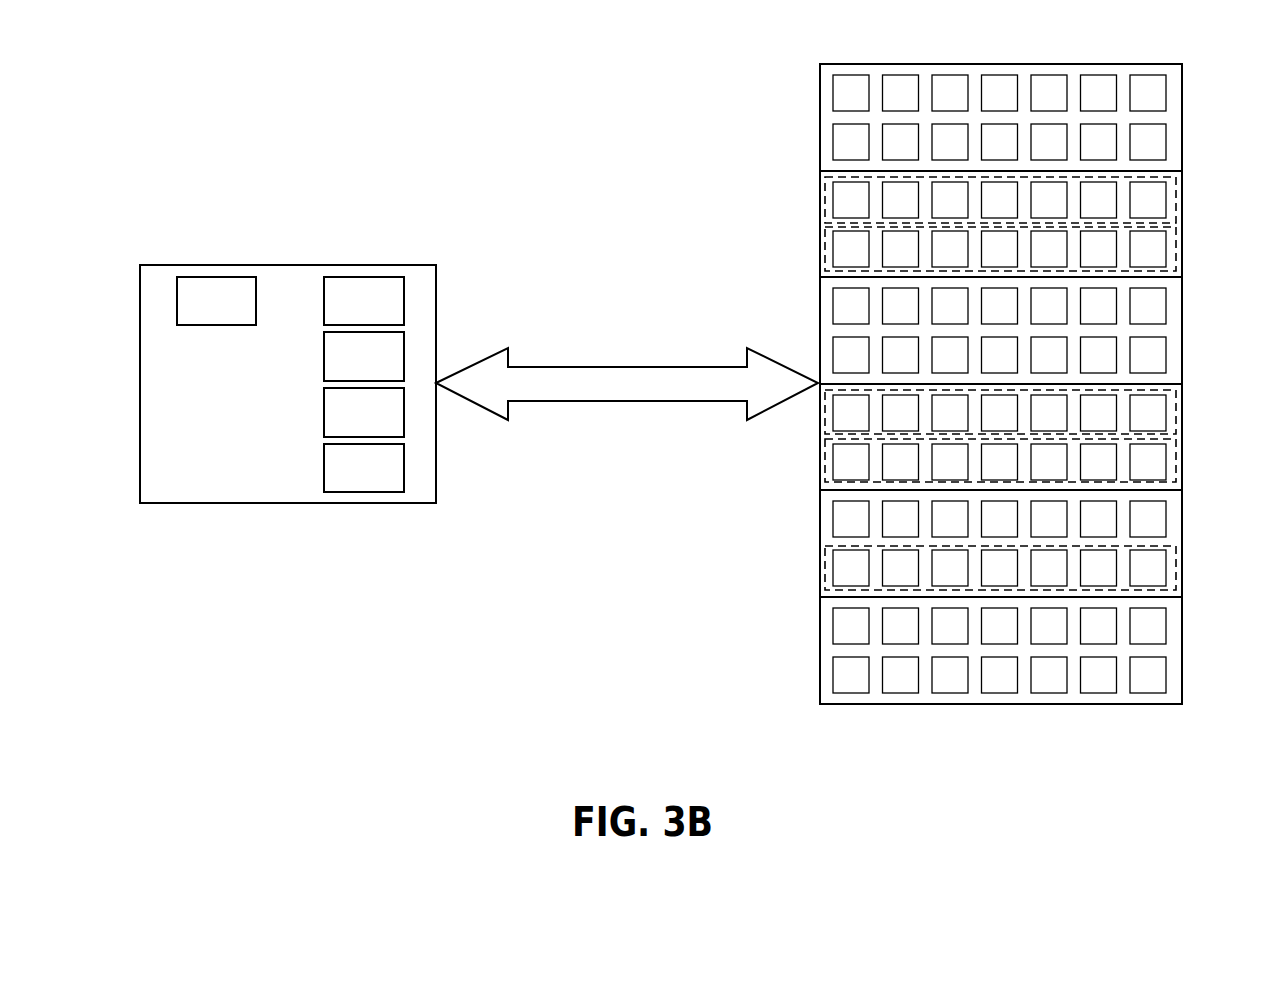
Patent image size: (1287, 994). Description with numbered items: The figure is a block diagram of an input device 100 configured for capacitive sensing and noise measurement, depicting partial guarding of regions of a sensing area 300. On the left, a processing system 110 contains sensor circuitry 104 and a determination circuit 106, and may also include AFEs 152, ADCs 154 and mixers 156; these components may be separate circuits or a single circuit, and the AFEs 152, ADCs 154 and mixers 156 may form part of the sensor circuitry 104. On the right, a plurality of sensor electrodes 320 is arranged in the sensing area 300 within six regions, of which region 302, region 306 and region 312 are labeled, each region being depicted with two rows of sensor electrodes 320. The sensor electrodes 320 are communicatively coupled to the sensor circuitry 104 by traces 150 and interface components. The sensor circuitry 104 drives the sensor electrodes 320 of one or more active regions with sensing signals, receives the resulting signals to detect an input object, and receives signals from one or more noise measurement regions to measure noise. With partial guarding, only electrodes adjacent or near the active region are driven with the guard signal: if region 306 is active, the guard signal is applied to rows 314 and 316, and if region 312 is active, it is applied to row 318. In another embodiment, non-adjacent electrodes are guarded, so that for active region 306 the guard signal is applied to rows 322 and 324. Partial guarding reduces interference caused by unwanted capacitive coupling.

The input device 100 is at (490, 610).
The processing system 110 is at (437, 303).
The sensor circuitry 104 is at (364, 301).
The determination circuit 106 is at (216, 301).
The AFEs 152 is at (364, 356).
The ADCs 154 is at (364, 412).
The mixers 156 is at (364, 468).
The traces 150 is at (628, 368).
The sensing area 300 is at (698, 232).
The region 302 is at (1183, 117).
The region 306 is at (1183, 331).
The region 312 is at (1183, 651).
The row 314 is at (822, 238).
The row 316 is at (1174, 400).
The row 318 is at (822, 557).
The sensor electrodes 320 is at (851, 77).
The row 322 is at (822, 190).
The row 324 is at (1174, 454).